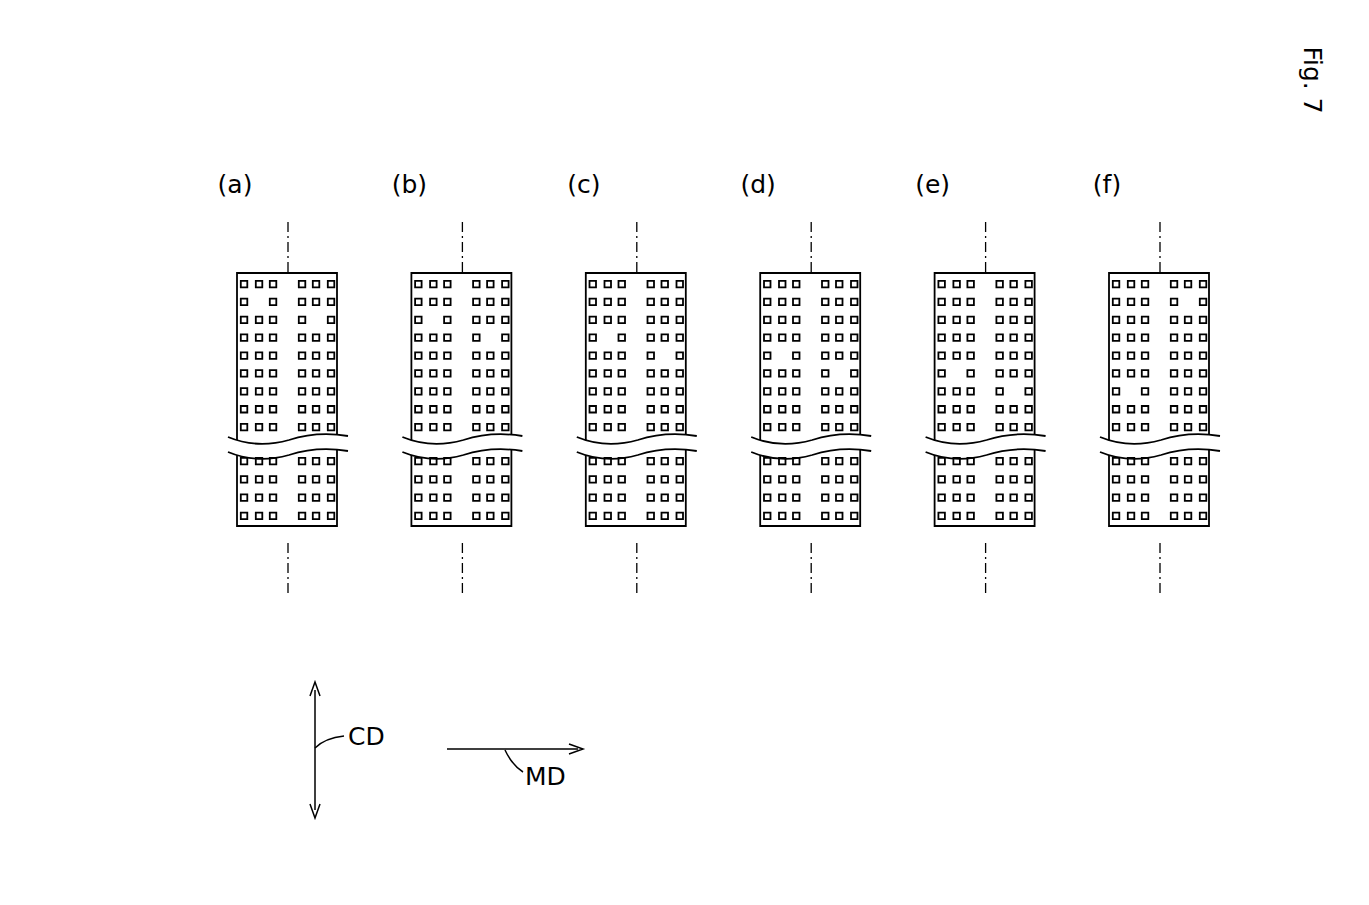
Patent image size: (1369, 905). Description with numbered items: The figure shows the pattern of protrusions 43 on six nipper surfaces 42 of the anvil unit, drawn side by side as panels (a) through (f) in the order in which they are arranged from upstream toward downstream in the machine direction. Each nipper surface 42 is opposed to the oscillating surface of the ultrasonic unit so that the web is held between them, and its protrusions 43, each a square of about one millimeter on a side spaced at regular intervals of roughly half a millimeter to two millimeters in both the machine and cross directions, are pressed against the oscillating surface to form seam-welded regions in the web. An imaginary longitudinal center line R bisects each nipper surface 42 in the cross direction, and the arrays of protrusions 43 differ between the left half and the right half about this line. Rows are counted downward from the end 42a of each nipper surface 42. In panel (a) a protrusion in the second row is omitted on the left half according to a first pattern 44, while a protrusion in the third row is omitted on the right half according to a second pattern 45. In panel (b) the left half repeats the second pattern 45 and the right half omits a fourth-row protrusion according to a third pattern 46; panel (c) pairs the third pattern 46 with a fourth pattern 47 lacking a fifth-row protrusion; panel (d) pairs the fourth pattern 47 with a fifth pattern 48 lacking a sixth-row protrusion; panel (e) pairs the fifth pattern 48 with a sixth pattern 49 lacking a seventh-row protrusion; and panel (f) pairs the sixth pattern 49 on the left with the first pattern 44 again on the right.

The nipper surface 42 is at (324, 247).
The end of the nipper surface 42a is at (253, 273).
The protrusions 43 is at (243, 285).
The first pattern 44 is at (230, 318).
The second pattern 45 is at (346, 308).
The third pattern 46 is at (521, 378).
The fourth pattern 47 is at (695, 308).
The fifth pattern 48 is at (869, 378).
The sixth pattern 49 is at (1044, 308).
The imaginary longitudinal center line R is at (288, 222).